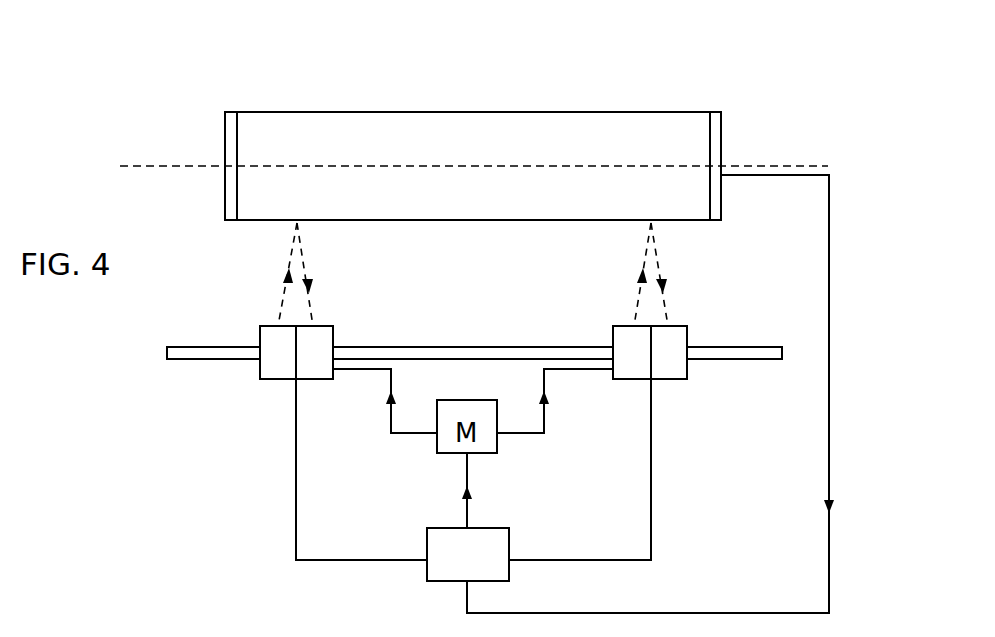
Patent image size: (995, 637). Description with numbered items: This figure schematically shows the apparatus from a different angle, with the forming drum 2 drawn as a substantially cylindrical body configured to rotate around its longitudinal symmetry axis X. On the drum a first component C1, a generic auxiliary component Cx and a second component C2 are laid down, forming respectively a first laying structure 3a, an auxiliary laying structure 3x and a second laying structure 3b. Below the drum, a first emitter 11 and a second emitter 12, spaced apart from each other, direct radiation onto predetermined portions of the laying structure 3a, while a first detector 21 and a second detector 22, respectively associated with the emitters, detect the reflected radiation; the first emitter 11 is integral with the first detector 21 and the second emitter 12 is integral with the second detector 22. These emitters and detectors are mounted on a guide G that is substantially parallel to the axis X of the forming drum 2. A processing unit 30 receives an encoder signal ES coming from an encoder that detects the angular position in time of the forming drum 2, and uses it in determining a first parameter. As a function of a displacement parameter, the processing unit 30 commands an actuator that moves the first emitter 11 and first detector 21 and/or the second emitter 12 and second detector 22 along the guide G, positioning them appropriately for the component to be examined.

The first laying structure 3a is at (417, 114).
The auxiliary laying structure 3x is at (417, 114).
The second laying structure 3b is at (236, 92).
The first component C1 is at (475, 62).
The auxiliary component Cx is at (475, 62).
The second component C2 is at (445, 120).
The forming drum 2 is at (718, 110).
The longitudinal symmetry axis X is at (474, 148).
The encoder signal ES is at (670, 394).
The guide G is at (452, 347).
The first emitter 11 is at (272, 380).
The first detector 21 is at (313, 380).
The second emitter 12 is at (632, 380).
The second detector 22 is at (670, 380).
The processing unit 30 is at (468, 554).